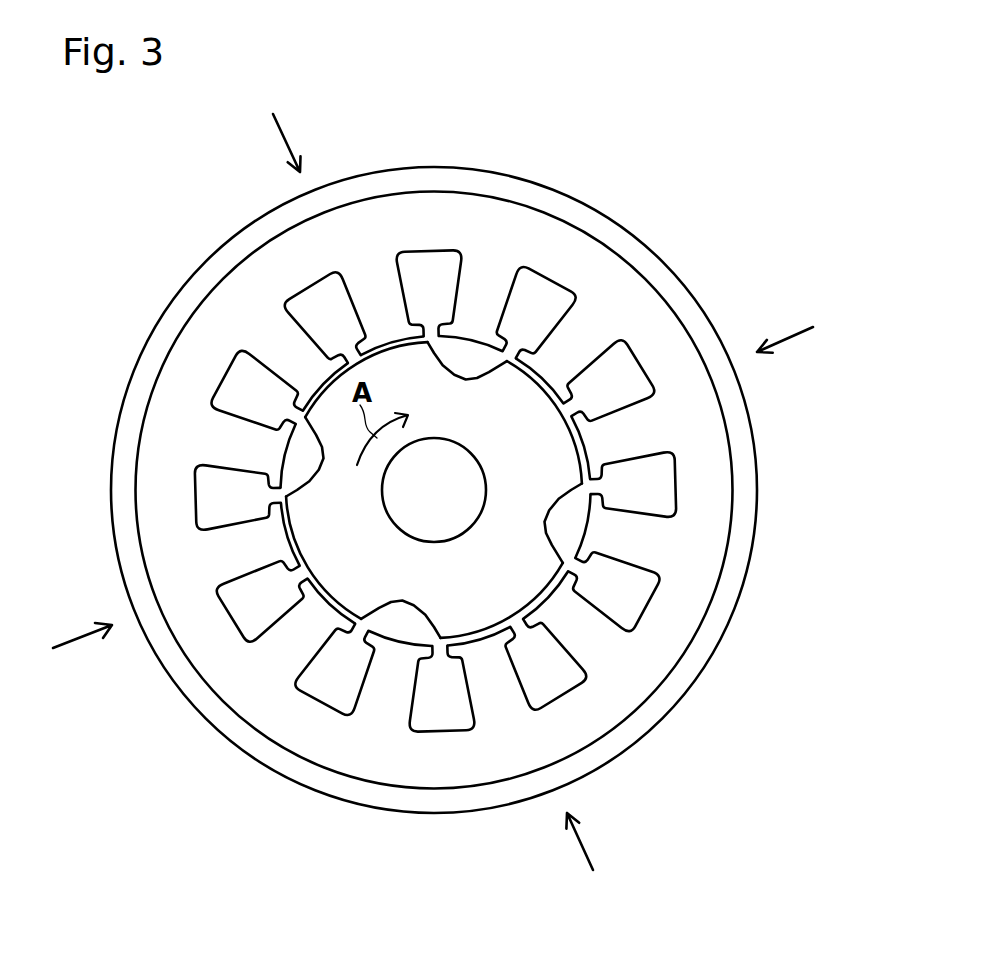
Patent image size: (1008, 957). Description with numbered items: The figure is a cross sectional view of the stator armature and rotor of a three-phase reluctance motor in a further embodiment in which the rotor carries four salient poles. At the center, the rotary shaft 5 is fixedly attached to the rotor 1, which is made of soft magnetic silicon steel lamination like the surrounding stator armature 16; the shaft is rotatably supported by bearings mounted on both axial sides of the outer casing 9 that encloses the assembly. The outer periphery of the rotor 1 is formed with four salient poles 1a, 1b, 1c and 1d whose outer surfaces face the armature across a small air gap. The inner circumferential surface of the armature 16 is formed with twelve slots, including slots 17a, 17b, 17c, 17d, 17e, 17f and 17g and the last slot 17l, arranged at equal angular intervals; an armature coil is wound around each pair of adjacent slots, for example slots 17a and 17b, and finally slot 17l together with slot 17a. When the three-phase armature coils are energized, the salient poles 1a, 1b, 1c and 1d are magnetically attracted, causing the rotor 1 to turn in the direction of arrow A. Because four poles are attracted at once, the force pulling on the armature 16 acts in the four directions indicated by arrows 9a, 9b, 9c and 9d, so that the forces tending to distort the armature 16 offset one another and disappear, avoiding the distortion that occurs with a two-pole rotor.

The rotor 1 is at (540, 516).
The salient pole 1a is at (402, 337).
The salient pole 1b is at (573, 436).
The salient pole 1c is at (517, 625).
The salient pole 1d is at (307, 567).
The rotary shaft 5 is at (478, 523).
The outer casing 9 is at (662, 252).
The arrow indicating force direction 9a is at (290, 136).
The arrow indicating force direction 9b is at (798, 338).
The arrow indicating force direction 9c is at (585, 840).
The arrow indicating force direction 9d is at (83, 642).
The stator armature 16 is at (551, 225).
The slot 17a is at (432, 250).
The slot 17b is at (557, 272).
The slot 17c is at (642, 358).
The slot 17d is at (677, 485).
The slot 17e is at (653, 597).
The slot 17f is at (568, 655).
The slot 17g is at (442, 731).
The slot 17l is at (300, 293).